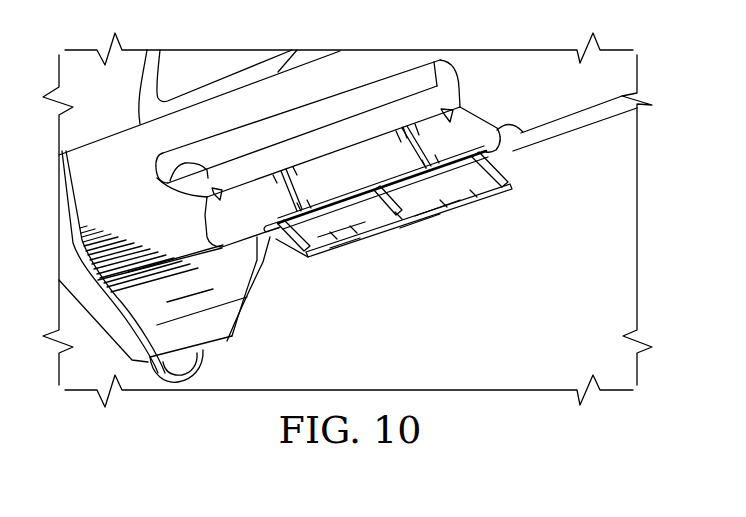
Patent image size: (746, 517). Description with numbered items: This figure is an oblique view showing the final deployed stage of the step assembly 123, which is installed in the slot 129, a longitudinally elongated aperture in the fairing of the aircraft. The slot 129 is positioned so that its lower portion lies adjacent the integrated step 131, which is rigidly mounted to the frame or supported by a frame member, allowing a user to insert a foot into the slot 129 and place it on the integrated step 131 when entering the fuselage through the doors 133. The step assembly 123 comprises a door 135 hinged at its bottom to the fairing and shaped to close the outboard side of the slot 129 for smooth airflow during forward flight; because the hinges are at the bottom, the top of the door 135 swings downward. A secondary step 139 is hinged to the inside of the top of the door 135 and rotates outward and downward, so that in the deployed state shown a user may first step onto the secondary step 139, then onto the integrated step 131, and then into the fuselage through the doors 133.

The step assembly 123 is at (388, 222).
The slot 129 is at (470, 91).
The integrated step 131 is at (170, 180).
The doors 133 is at (210, 67).
The door 135 is at (524, 148).
The secondary step 139 is at (458, 208).